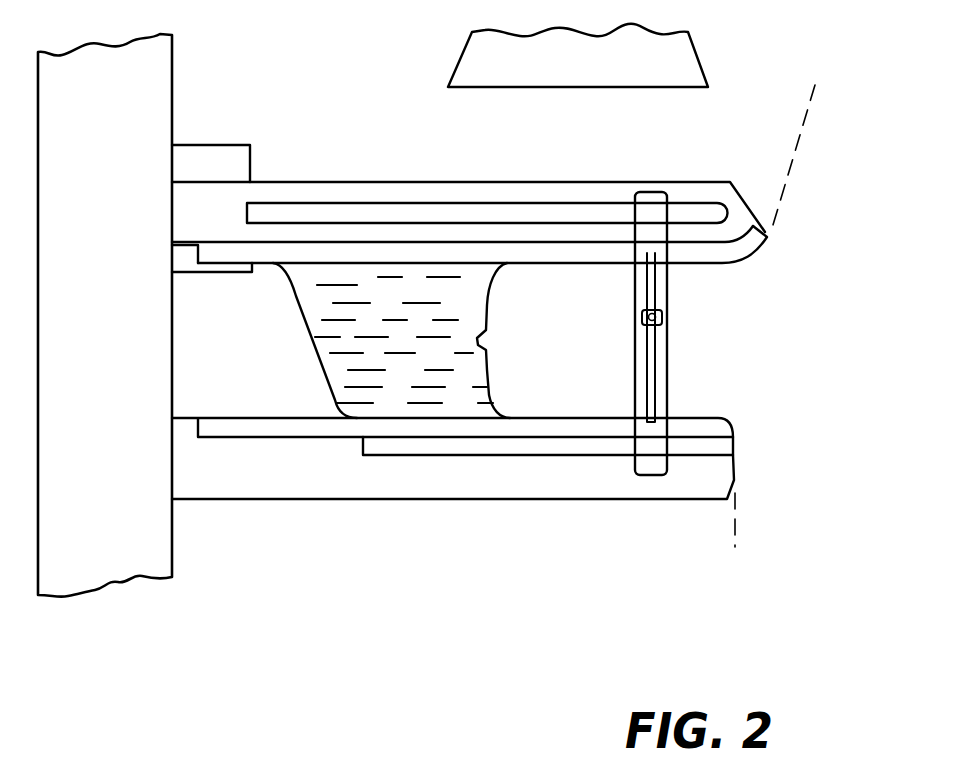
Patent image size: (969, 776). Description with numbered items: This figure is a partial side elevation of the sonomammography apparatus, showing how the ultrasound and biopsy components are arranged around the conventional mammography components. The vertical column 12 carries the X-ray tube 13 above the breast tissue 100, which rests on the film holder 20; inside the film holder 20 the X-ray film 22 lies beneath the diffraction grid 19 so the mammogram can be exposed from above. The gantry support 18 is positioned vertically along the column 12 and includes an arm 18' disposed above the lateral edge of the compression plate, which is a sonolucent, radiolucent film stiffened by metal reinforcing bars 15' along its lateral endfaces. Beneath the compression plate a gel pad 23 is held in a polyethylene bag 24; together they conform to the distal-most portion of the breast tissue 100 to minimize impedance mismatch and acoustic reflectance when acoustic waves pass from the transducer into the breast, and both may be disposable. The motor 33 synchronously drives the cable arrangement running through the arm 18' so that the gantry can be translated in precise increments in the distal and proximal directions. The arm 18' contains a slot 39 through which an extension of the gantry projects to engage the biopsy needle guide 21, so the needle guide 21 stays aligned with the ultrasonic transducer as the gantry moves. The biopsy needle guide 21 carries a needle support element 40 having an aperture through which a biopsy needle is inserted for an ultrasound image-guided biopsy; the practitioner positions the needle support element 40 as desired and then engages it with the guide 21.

The vertical column 12 is at (111, 523).
The X-ray tube 13 is at (690, 68).
The metal reinforcing bars 15' is at (809, 316).
The gantry support 18 is at (468, 191).
The arms 18' is at (469, 195).
The diffraction grid 19 is at (250, 428).
The film holder 20 is at (520, 490).
The biopsy needle guide 21 is at (665, 373).
The X-ray film 22 is at (418, 447).
The gel pad 23 is at (345, 360).
The polyethylene bag 24 is at (290, 285).
The motor 33 is at (210, 145).
The slot 39 is at (500, 215).
The needle support element 40 is at (663, 315).
The breast tissue 100 is at (593, 354).